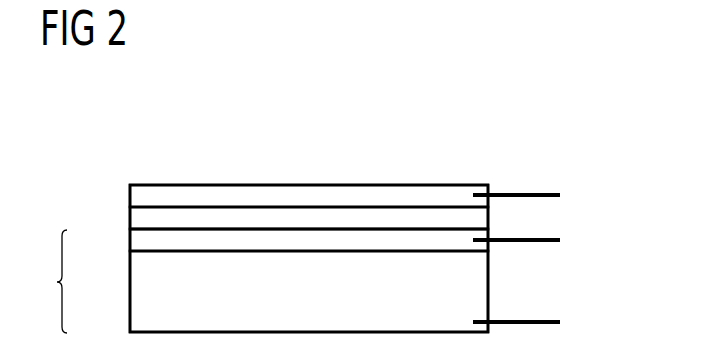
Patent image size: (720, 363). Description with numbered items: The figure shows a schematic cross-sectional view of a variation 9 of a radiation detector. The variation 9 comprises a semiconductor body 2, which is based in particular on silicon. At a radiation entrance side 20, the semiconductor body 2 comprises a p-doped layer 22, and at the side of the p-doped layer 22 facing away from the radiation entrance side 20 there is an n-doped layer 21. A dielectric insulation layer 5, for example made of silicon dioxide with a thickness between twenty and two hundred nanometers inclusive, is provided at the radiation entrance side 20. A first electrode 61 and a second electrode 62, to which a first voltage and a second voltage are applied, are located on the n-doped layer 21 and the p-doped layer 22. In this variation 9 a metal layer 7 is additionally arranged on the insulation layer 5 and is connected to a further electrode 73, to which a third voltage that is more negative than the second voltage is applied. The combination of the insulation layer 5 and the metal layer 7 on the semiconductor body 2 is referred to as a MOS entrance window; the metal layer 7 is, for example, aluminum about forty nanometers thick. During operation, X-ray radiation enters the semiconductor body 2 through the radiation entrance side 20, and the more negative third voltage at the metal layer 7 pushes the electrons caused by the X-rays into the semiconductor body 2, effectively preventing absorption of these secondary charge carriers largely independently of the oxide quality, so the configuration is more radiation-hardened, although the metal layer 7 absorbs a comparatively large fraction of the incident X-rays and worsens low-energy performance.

The variation of a radiation detector 9 is at (514, 105).
The metal layer 7 is at (166, 196).
The dielectric insulation layer 5 is at (140, 216).
The radiation entrance side 20 is at (334, 228).
The p-doped layer 22 is at (140, 240).
The n-doped layer 21 is at (138, 297).
The semiconductor body 2 is at (53, 281).
The further electrode 73 is at (543, 193).
The second electrode 62 is at (557, 237).
The first electrode 61 is at (543, 319).